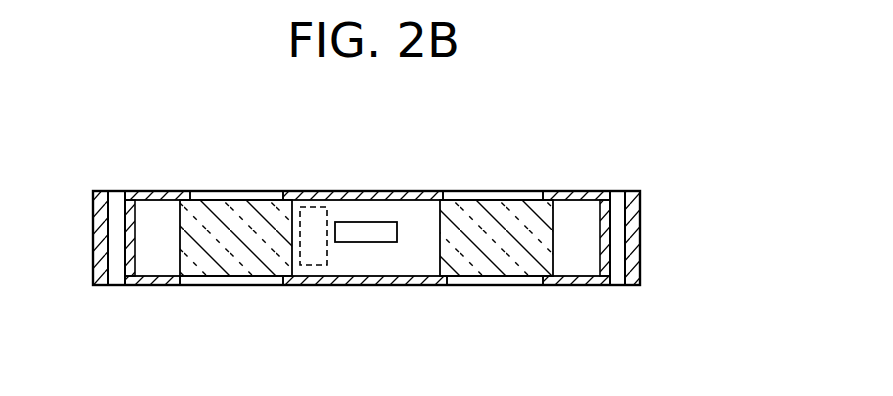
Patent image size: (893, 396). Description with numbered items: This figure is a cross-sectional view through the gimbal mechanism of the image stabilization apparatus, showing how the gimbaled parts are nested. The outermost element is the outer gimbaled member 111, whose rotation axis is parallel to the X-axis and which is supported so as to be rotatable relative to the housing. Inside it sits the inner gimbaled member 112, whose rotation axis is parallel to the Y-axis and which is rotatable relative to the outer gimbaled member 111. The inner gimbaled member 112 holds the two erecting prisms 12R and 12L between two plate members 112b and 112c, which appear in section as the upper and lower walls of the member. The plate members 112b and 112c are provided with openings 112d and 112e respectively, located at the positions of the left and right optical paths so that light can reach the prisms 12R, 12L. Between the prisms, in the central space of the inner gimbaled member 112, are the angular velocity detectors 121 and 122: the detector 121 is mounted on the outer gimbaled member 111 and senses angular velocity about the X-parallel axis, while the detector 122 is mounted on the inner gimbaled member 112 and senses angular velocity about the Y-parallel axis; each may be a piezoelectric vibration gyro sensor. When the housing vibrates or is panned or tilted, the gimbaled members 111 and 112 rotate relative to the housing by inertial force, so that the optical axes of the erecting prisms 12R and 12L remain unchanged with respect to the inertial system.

The outer gimbaled member 111 is at (632, 228).
The inner gimbaled member 112 is at (588, 190).
The plate member 112b is at (143, 191).
The plate member 112c is at (140, 286).
The opening 112d is at (522, 193).
The opening 112e is at (213, 191).
The erecting prism 12R is at (268, 210).
The erecting prism 12L is at (476, 205).
The angular velocity detector 121 is at (310, 258).
The angular velocity detector 122 is at (373, 226).